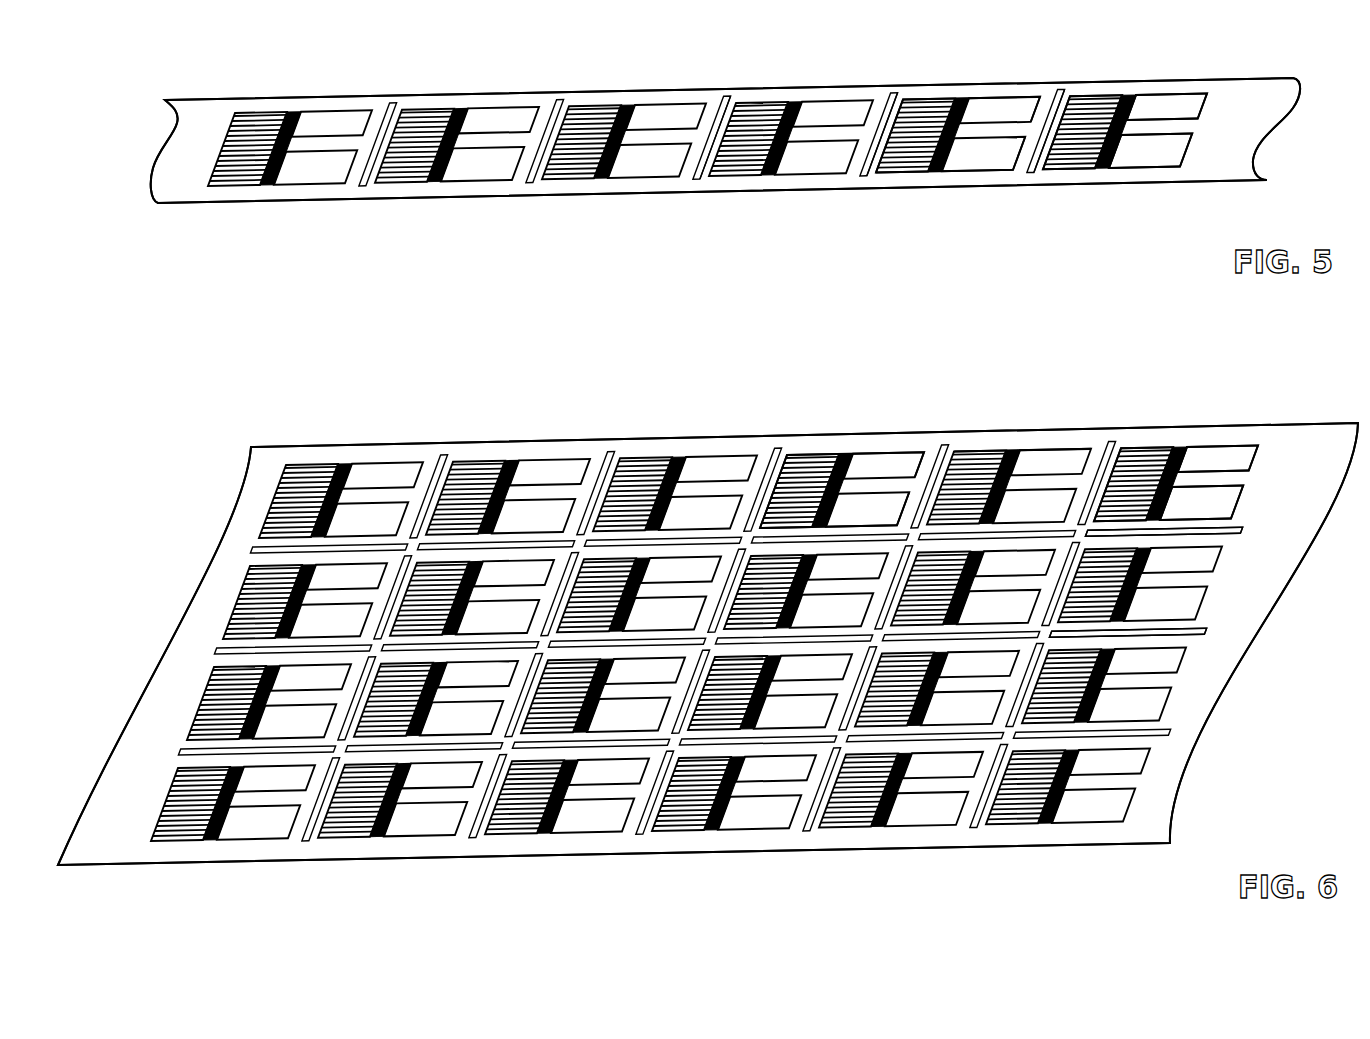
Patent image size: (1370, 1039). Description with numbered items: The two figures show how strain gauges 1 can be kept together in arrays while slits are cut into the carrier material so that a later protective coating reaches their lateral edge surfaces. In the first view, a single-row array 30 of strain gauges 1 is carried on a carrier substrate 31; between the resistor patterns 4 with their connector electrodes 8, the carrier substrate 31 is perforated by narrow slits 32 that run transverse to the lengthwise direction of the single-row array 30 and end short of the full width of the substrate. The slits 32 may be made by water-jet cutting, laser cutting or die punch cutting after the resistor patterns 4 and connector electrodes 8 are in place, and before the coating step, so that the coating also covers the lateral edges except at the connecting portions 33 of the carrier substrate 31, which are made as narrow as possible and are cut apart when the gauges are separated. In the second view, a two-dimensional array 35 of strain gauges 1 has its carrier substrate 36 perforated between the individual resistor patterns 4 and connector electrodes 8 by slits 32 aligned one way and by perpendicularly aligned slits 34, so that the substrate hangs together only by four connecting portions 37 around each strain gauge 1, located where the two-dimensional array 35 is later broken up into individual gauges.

In FIG. 5, the strain gauge 1 is at (927, 182).
In FIG. 6, the strain gauge 1 is at (838, 449).
In FIG. 5, the resistor pattern 4 is at (1091, 103).
In FIG. 6, the resistor pattern 4 is at (1142, 468).
In FIG. 5, the connector electrode 8 is at (1160, 148).
In FIG. 6, the connector electrode 8 is at (1210, 497).
In FIG. 5, the single-row array 30 is at (1264, 64).
In FIG. 5, the carrier substrate 31 is at (1256, 134).
In FIG. 5, the slit 32 is at (722, 97).
In FIG. 6, the slit 32 is at (941, 447).
In FIG. 5, the connecting portion 33 is at (734, 97).
In FIG. 6, the perpendicularly aligned slit 34 is at (1207, 627).
In FIG. 6, the two-dimensional array 35 is at (1287, 405).
In FIG. 6, the carrier substrate 36 is at (1309, 506).
In FIG. 6, the connecting portion 37 is at (1078, 532).